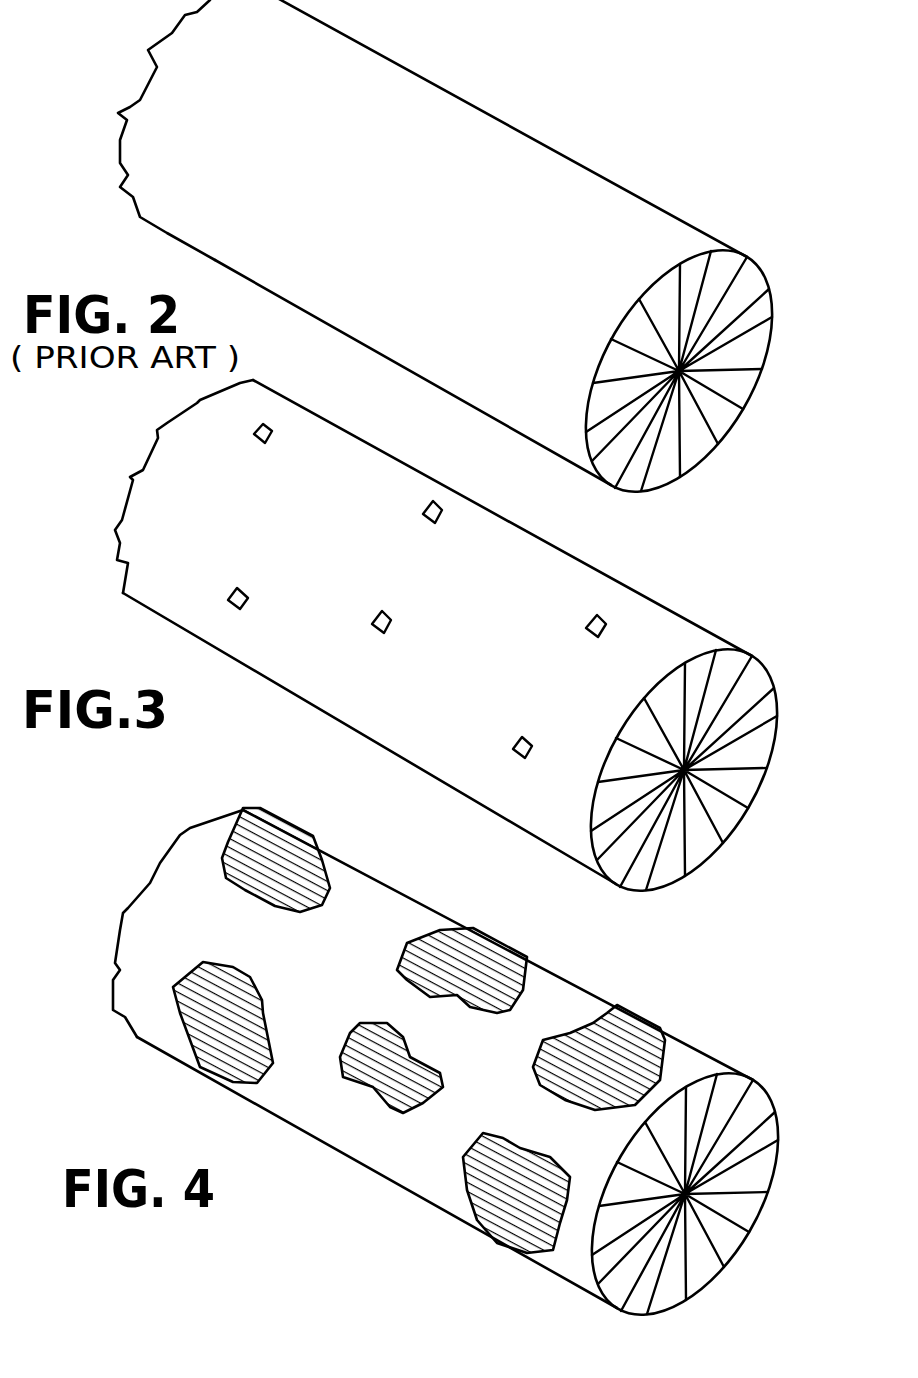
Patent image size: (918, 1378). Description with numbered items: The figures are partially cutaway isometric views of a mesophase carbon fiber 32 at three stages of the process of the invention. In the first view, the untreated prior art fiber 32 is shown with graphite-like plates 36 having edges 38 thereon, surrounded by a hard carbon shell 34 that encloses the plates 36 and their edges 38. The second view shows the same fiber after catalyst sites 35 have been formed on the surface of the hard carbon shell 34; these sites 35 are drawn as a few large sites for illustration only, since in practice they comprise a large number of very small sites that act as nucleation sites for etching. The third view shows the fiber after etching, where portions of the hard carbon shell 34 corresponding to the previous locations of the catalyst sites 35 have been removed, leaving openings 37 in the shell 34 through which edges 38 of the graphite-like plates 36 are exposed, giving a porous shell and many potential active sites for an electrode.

In FIG. 2, the mesophase fiber 32 is at (452, 65).
In FIG. 3, the mesophase fiber 32 is at (623, 567).
In FIG. 4, the mesophase fiber 32 is at (593, 977).
In FIG. 2, the hard carbon shell 34 is at (454, 262).
In FIG. 3, the hard carbon shell 34 is at (452, 659).
In FIG. 4, the hard carbon shell 34 is at (466, 1079).
In FIG. 3, the catalyst sites 35 is at (258, 445).
In FIG. 2, the graphite-like plates 36 is at (757, 304).
In FIG. 3, the graphite-like plates 36 is at (767, 700).
In FIG. 4, the graphite-like plates 36 is at (768, 1124).
In FIG. 4, the openings 37 is at (250, 897).
In FIG. 2, the edges 38 is at (772, 318).
In FIG. 3, the edges 38 is at (777, 722).
In FIG. 4, the edges 38 is at (778, 1145).